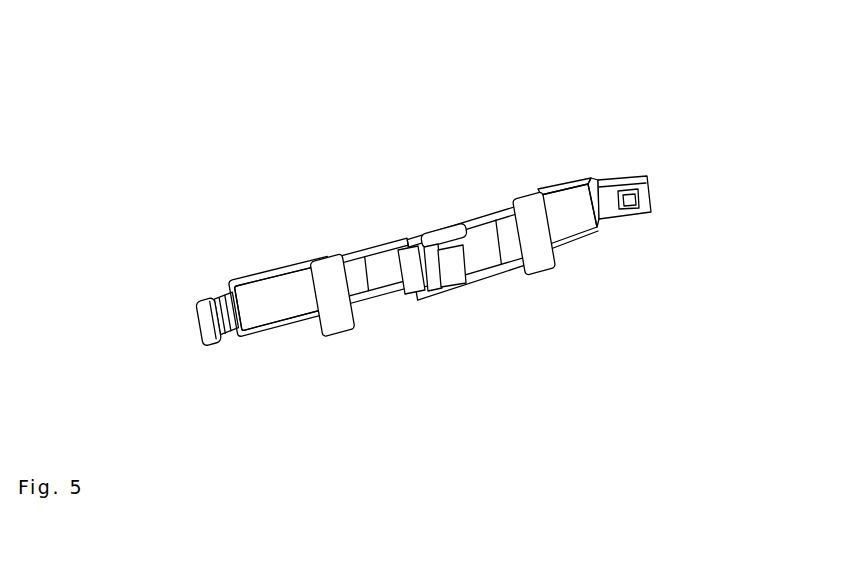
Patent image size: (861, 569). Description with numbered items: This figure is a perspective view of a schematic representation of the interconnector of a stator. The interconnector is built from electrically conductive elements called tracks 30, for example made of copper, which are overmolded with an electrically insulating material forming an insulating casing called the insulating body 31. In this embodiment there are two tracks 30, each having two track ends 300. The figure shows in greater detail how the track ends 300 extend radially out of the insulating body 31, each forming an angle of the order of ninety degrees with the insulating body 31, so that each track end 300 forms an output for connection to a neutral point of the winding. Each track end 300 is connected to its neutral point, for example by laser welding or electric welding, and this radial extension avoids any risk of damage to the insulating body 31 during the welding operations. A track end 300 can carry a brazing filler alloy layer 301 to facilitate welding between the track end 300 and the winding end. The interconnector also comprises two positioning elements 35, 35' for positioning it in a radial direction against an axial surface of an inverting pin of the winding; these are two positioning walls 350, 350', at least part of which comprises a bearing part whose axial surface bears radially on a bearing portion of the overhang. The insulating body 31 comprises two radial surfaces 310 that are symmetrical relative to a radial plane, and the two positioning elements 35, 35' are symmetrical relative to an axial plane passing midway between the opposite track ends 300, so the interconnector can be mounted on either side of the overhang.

The track 30 is at (447, 226).
The insulating body 31 is at (329, 347).
The positioning element 35 is at (501, 297).
The positioning element 35' is at (401, 335).
The track end 300 is at (432, 232).
The brazing filler alloy layer 301 is at (653, 126).
The radial surface 310 is at (576, 141).
The positioning wall 350 is at (537, 144).
The positioning wall 350' is at (343, 215).